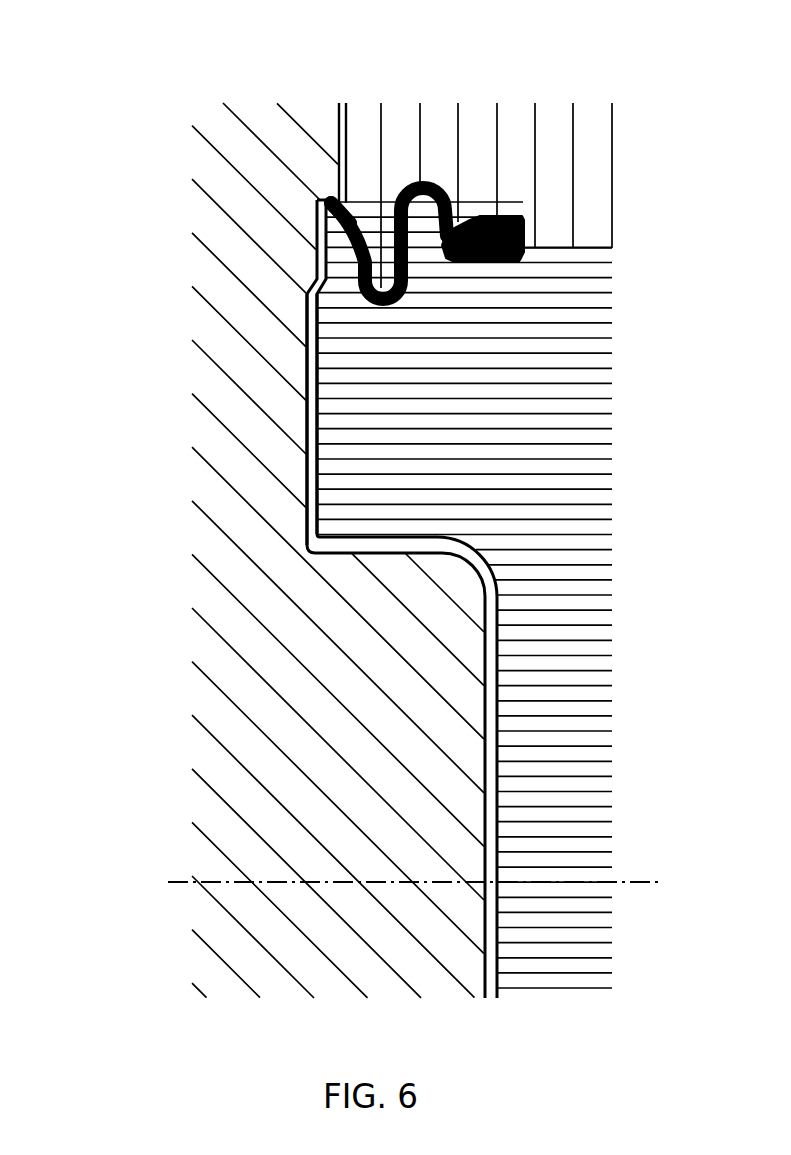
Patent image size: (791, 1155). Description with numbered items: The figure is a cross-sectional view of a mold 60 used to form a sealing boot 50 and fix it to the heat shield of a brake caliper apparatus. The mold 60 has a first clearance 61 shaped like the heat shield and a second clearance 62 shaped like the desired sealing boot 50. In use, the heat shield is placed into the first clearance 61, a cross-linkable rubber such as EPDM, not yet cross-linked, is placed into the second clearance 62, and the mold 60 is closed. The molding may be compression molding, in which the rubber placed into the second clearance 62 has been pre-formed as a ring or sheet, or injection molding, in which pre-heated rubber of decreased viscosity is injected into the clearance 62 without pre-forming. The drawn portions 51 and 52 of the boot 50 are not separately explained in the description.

The sealing boot 50 is at (418, 180).
The first seal end portion 51 is at (330, 200).
The seal bead 52 is at (523, 218).
The mold 60 is at (133, 263).
The first clearance 61 is at (303, 415).
The second clearance 62 is at (520, 253).